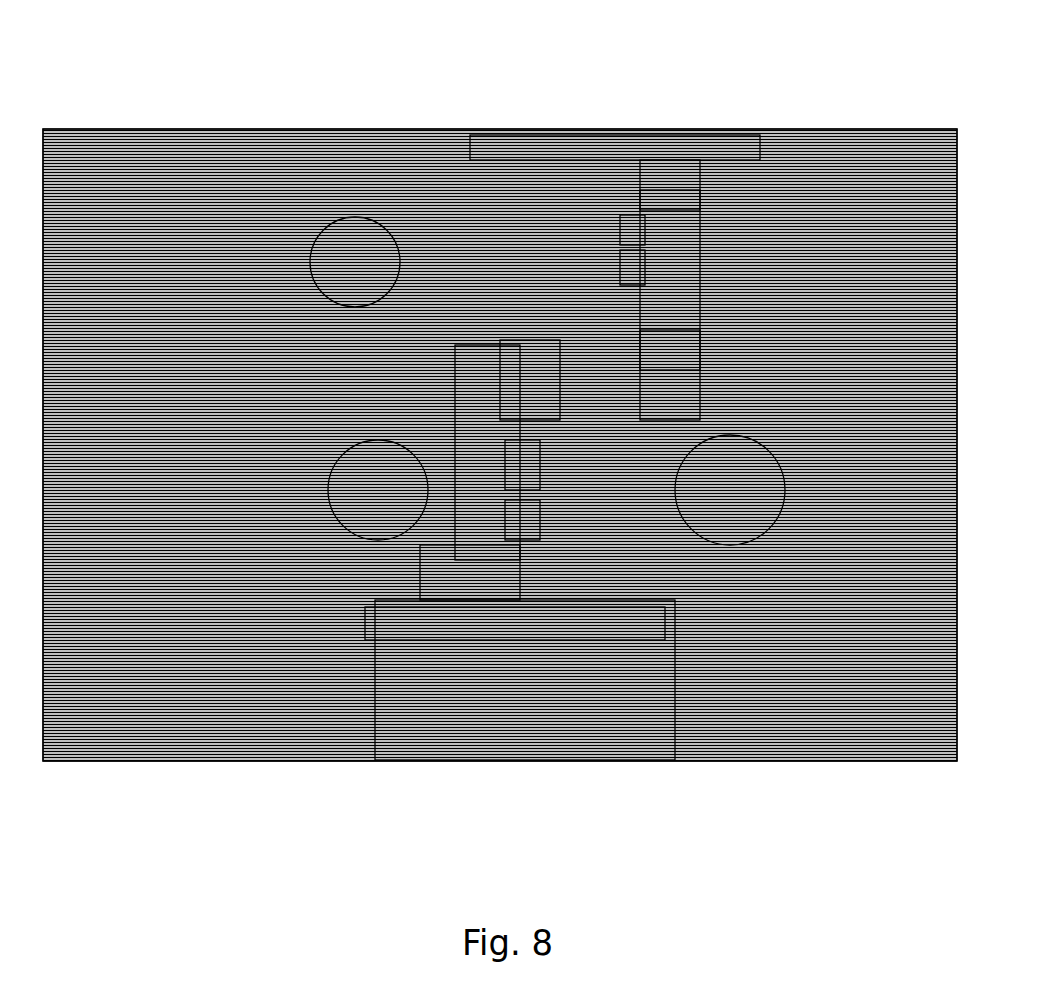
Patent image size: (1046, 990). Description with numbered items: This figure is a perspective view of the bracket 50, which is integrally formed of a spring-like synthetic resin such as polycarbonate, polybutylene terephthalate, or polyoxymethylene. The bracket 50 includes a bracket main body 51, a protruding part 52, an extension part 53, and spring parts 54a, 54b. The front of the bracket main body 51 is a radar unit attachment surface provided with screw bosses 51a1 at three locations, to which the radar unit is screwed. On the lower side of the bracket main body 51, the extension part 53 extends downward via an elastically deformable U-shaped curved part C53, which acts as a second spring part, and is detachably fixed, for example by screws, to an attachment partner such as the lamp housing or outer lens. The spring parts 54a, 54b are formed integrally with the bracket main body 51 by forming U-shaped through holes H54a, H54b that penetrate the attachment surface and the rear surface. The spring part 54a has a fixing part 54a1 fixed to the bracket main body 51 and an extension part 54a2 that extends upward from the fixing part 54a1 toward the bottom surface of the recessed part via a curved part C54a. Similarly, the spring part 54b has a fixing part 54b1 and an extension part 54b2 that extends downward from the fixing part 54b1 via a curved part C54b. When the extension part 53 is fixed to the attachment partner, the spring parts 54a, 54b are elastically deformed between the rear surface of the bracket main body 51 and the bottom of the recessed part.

The bracket 50 is at (462, 95).
The bracket main body 51 is at (500, 445).
The protruding part 52 is at (539, 142).
The extension part 53 is at (525, 763).
The U-shaped curved part C53 is at (573, 635).
The screw boss 51a1 is at (315, 272).
The spring part 54a is at (490, 396).
The fixing part 54a1 is at (487, 545).
The extension part 54a2 is at (511, 400).
The curved part C54a is at (510, 477).
The U-shaped through hole H54a is at (512, 520).
The spring part 54b is at (695, 363).
The fixing part 54b1 is at (668, 205).
The extension part 54b2 is at (680, 352).
The U-shaped through hole H54b is at (635, 228).
The curved part C54b is at (655, 265).